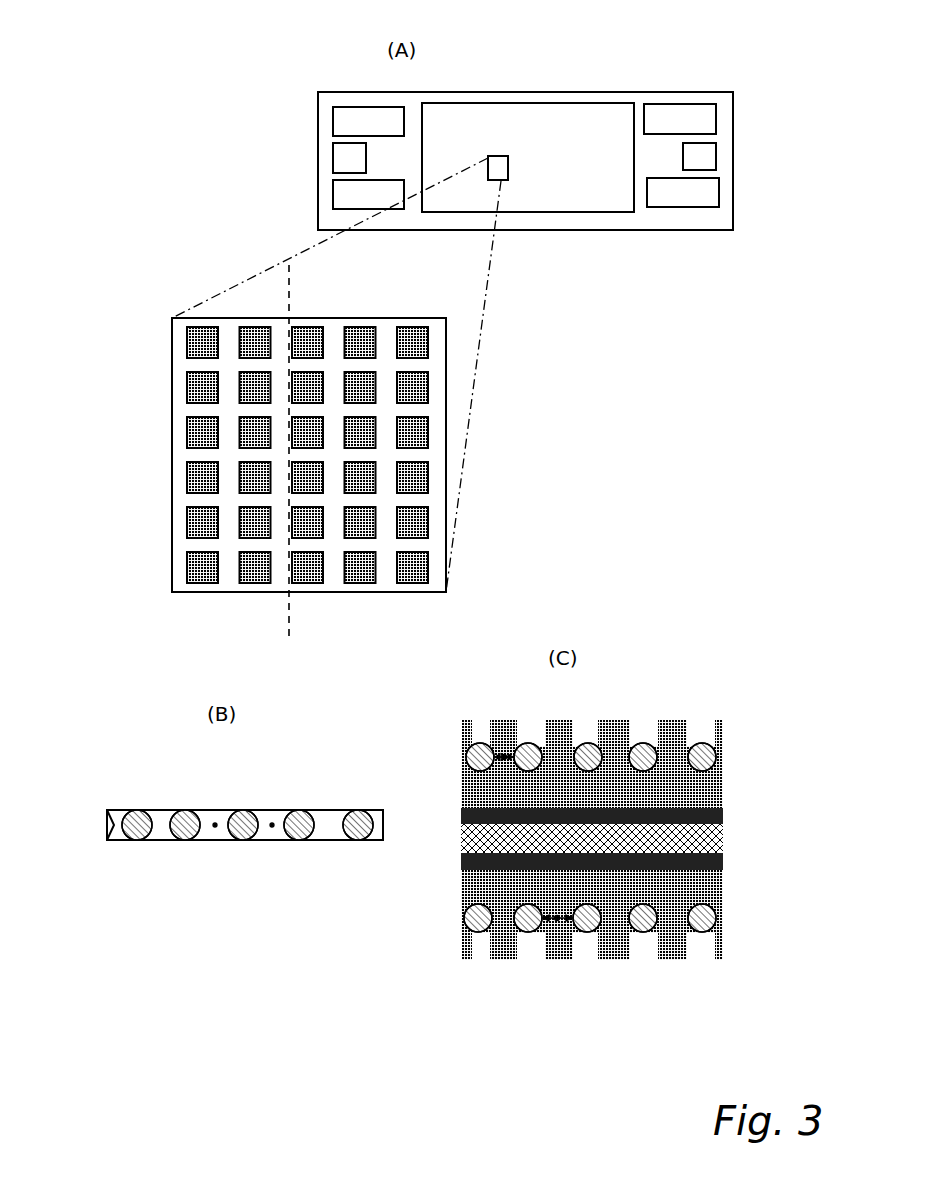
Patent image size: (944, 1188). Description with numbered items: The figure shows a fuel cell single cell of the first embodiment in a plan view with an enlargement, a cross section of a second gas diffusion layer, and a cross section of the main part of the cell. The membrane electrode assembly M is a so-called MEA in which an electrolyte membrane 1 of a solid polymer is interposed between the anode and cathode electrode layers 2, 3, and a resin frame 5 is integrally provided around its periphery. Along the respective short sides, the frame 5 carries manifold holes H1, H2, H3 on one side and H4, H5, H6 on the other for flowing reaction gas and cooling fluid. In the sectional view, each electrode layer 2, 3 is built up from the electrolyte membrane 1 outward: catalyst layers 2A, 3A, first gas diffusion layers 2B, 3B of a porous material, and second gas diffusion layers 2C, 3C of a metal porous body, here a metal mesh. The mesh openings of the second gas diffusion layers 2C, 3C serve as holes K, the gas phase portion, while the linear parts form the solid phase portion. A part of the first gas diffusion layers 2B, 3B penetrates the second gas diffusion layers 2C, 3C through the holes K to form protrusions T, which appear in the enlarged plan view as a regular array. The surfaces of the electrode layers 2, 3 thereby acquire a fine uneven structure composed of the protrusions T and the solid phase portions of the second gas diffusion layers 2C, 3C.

The electrolyte membrane 1 is at (462, 841).
The anode electrode layer 2 is at (596, 140).
The cathode electrode layer 3 is at (798, 962).
The resin frame 5 is at (655, 222).
The membrane electrode assembly M is at (585, 115).
The manifold hole H1 is at (340, 121).
The manifold hole H2 is at (350, 165).
The manifold hole H3 is at (345, 203).
The manifold hole H4 is at (703, 118).
The manifold hole H5 is at (705, 158).
The manifold hole H6 is at (703, 199).
The protrusion T is at (313, 322).
The hole K is at (270, 830).
The catalyst layer 2A is at (724, 818).
The first gas diffusion layer 2B is at (432, 343).
The second gas diffusion layer 2C is at (446, 410).
The catalyst layer 3A is at (724, 866).
The first gas diffusion layer 3B is at (738, 913).
The second gas diffusion layer 3C is at (738, 948).